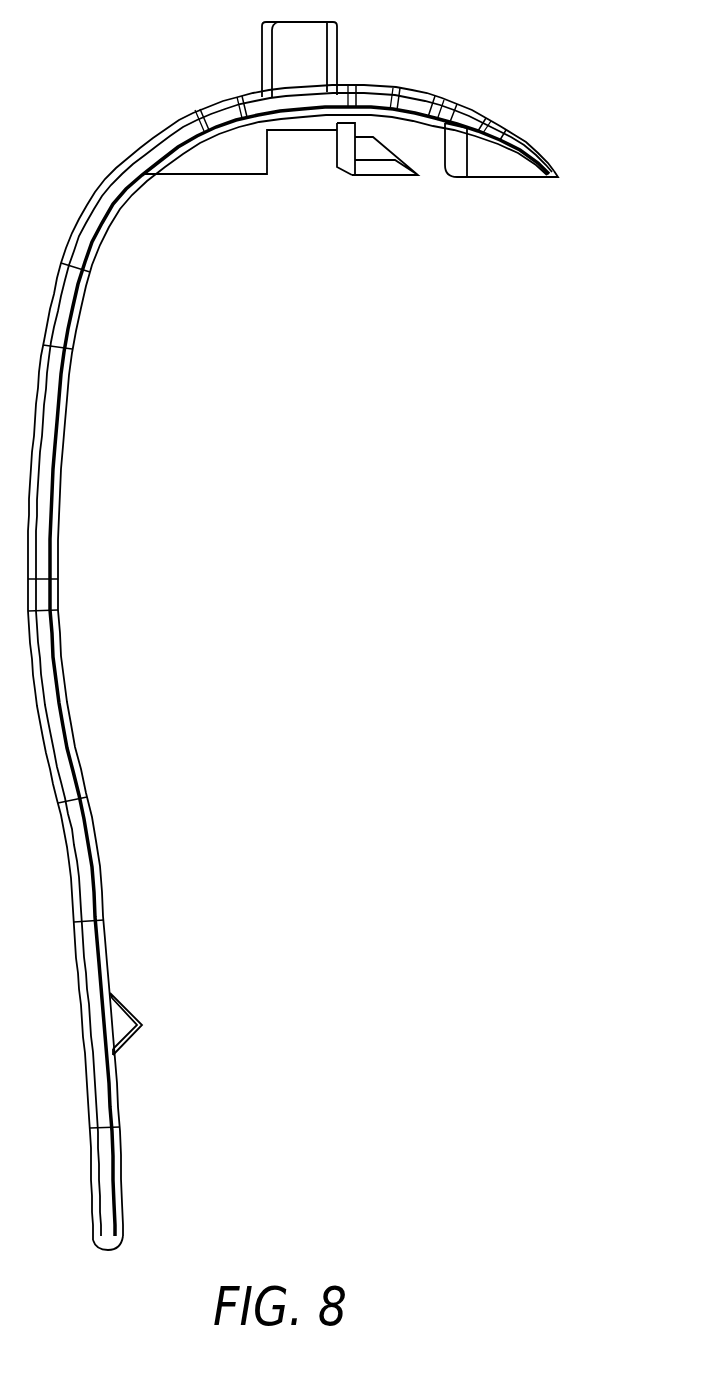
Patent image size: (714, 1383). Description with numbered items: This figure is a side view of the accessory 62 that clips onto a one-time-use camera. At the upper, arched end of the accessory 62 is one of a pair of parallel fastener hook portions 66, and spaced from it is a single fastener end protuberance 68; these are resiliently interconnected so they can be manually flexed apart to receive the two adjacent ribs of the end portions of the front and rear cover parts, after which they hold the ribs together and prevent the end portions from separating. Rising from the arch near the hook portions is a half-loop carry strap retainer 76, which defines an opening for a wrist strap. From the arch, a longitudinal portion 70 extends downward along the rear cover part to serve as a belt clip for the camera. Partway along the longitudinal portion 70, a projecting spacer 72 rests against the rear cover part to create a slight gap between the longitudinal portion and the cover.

The accessory 62 is at (98, 717).
The fastener hook portion 66 is at (387, 170).
The fastener end protuberance 68 is at (510, 162).
The longitudinal portion 70 is at (48, 563).
The projecting spacer 72 is at (142, 1026).
The half-loop carry strap retainer 76 is at (315, 37).